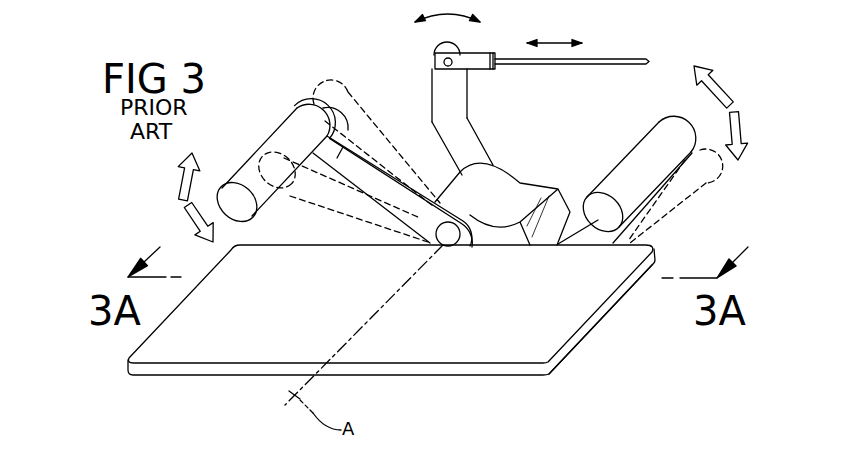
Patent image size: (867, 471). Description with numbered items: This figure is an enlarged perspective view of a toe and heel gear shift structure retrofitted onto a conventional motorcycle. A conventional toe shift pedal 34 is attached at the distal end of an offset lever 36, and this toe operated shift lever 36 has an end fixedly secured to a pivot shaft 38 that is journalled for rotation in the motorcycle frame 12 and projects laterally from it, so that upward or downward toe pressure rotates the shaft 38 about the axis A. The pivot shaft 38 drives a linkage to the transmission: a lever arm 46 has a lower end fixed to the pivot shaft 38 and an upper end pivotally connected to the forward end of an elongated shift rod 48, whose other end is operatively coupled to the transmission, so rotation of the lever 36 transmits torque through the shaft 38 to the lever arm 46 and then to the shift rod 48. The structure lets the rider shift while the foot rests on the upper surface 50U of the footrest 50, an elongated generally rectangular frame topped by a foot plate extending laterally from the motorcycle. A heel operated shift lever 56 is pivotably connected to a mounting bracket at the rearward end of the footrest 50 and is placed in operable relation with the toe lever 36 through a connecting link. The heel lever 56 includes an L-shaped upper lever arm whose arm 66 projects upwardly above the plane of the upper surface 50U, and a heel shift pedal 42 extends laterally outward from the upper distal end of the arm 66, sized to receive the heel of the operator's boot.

The motorcycle frame 12 is at (493, 185).
The shift pedal 34 is at (268, 140).
The offset lever 36 is at (298, 110).
The pivot shaft 38 is at (518, 185).
The shift pedal 42 is at (637, 165).
The lever arm 46 is at (437, 97).
The shift rod 48 is at (607, 62).
The footrest 50 is at (116, 371).
The upper surface 50U is at (268, 350).
The heel operated shift lever 56 is at (649, 331).
The arm 66 is at (652, 205).